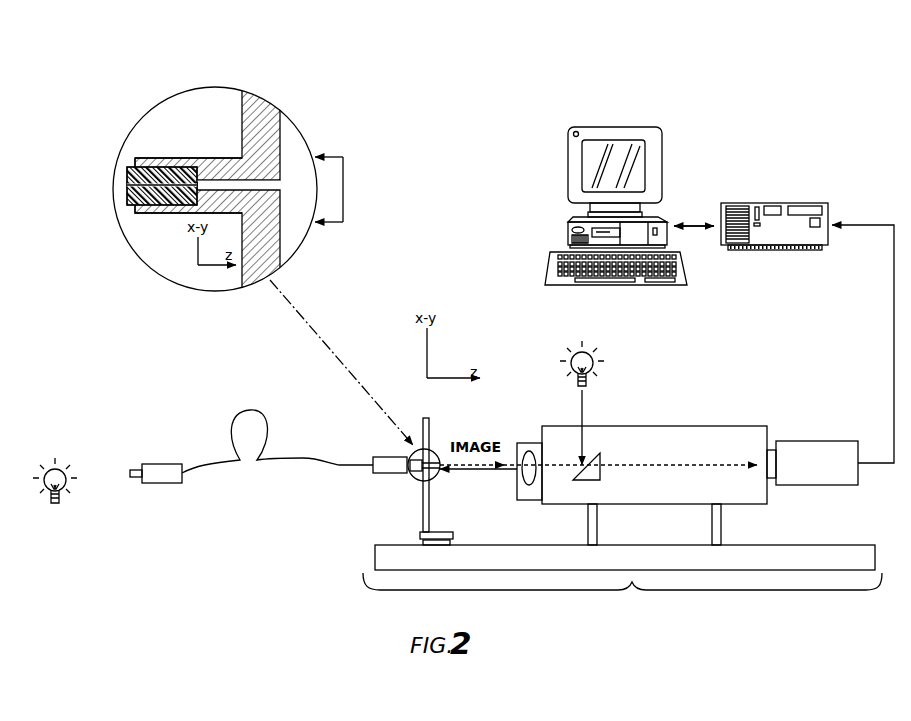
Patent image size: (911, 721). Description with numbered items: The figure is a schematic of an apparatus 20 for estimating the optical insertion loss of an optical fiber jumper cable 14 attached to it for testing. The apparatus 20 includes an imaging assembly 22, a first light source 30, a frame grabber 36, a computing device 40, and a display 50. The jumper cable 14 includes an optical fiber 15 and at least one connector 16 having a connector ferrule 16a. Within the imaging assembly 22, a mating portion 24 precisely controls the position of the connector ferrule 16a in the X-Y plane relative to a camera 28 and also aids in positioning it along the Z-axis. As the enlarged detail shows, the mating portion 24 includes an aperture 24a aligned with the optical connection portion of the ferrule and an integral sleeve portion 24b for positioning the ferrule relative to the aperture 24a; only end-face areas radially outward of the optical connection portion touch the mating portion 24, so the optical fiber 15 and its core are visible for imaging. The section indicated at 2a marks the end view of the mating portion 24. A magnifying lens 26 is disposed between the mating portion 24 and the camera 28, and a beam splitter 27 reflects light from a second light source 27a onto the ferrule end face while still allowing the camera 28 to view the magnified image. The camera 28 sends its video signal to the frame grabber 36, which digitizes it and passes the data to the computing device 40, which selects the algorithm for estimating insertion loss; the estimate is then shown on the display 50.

The apparatus 20 is at (742, 111).
The imaging assembly 22 is at (622, 583).
The jumper cable 14 is at (330, 467).
The mating portion 24 is at (422, 471).
The aperture 24a is at (252, 182).
The sleeve portion 24b is at (157, 165).
The connector 16 is at (118, 175).
The connector ferrule 16a is at (128, 182).
The optical fiber 15 is at (177, 190).
The section line 2a is at (315, 188).
The lens 26 is at (528, 452).
The beam splitter 27 is at (597, 453).
The second light source 27a is at (590, 360).
The camera 28 is at (813, 480).
The first light source 30 is at (57, 505).
The frame grabber 36 is at (762, 203).
The computing device 40 is at (567, 237).
The display 50 is at (570, 180).